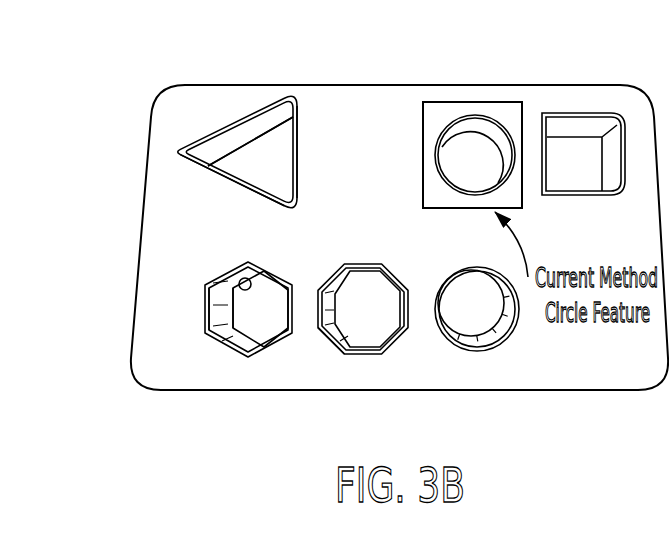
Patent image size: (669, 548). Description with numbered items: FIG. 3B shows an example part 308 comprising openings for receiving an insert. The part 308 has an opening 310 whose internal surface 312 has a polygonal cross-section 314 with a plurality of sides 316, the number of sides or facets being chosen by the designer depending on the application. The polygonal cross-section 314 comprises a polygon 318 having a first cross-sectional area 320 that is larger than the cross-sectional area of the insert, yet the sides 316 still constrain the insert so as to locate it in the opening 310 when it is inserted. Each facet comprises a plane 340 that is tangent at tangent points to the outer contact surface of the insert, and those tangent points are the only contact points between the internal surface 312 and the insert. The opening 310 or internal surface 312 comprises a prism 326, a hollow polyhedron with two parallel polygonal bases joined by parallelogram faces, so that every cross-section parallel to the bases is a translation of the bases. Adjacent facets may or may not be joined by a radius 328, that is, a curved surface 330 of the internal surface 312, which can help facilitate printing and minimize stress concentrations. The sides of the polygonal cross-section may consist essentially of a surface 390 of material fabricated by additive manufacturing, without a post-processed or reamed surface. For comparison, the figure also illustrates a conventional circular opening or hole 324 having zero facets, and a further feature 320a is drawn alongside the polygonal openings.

The part 308 is at (127, 392).
The triangular feature 320a is at (258, 157).
The radius 328 is at (275, 197).
The curved surface 330 is at (195, 152).
The polygon 318 is at (212, 183).
The prism 326 is at (299, 162).
The circular opening or hole 324 is at (492, 133).
The first cross-sectional area 320 is at (585, 157).
The internal surface 312 is at (248, 272).
The surface of material fabricated by additive manufacturing 390 is at (263, 250).
The sides 316 is at (222, 313).
The plane 340 is at (300, 273).
The opening 310 is at (362, 315).
The polygonal cross-section 314 is at (323, 351).